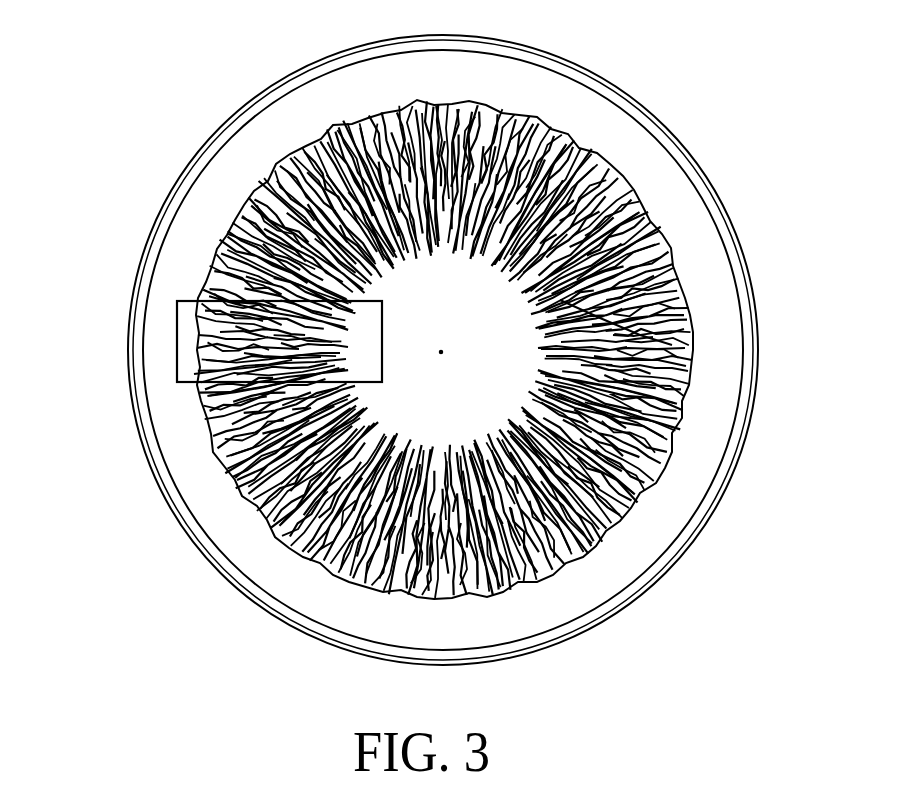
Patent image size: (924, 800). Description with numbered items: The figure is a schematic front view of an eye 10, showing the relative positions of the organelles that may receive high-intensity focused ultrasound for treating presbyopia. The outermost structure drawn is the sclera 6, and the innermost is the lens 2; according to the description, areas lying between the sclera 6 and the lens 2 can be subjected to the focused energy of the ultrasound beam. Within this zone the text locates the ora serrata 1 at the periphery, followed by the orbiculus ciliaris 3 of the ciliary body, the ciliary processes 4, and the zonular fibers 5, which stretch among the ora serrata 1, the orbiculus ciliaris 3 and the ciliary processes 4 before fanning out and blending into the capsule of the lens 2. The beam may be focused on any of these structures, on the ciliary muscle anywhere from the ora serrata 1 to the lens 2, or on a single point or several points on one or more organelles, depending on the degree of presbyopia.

The eye 10 is at (435, 359).
The sclera 6 is at (195, 568).
The ora serrata 1 is at (690, 293).
The orbiculus ciliaris 3 is at (670, 327).
The ciliary processes 4 is at (603, 323).
The zonular fibers 5 is at (577, 413).
The lens 2 is at (431, 379).